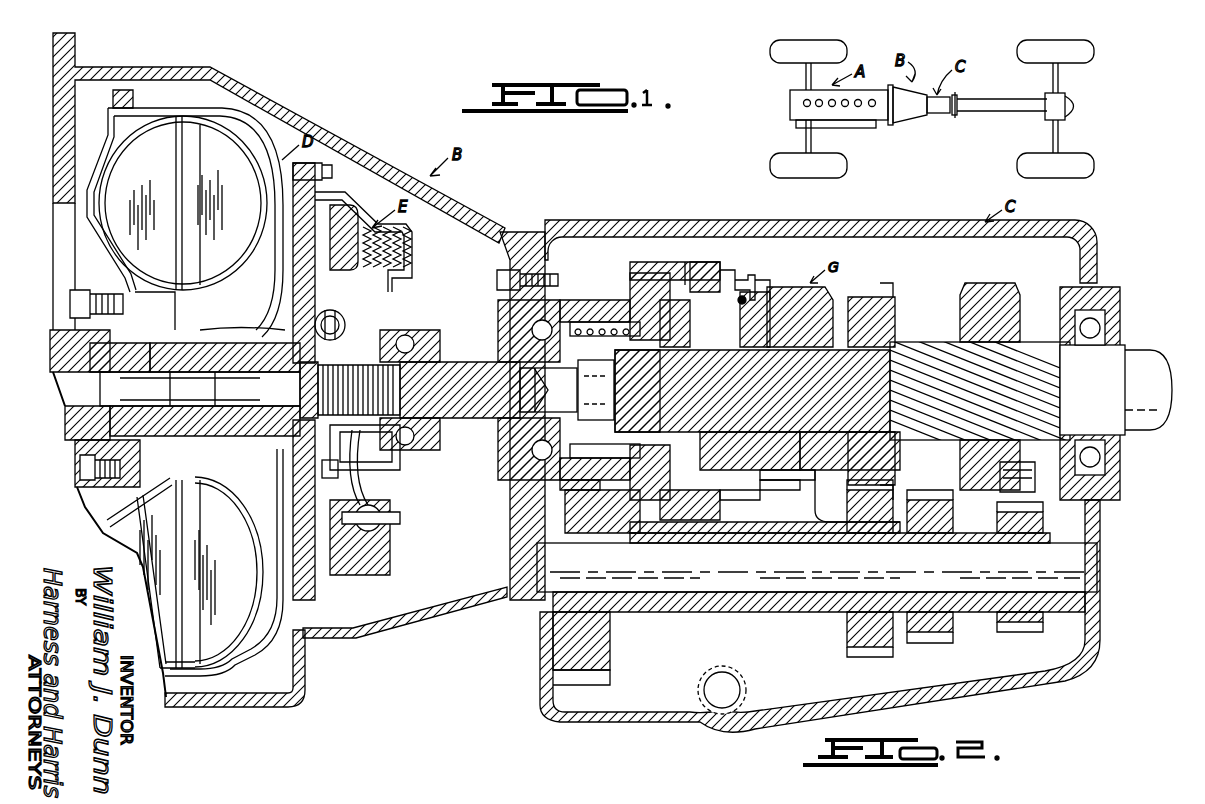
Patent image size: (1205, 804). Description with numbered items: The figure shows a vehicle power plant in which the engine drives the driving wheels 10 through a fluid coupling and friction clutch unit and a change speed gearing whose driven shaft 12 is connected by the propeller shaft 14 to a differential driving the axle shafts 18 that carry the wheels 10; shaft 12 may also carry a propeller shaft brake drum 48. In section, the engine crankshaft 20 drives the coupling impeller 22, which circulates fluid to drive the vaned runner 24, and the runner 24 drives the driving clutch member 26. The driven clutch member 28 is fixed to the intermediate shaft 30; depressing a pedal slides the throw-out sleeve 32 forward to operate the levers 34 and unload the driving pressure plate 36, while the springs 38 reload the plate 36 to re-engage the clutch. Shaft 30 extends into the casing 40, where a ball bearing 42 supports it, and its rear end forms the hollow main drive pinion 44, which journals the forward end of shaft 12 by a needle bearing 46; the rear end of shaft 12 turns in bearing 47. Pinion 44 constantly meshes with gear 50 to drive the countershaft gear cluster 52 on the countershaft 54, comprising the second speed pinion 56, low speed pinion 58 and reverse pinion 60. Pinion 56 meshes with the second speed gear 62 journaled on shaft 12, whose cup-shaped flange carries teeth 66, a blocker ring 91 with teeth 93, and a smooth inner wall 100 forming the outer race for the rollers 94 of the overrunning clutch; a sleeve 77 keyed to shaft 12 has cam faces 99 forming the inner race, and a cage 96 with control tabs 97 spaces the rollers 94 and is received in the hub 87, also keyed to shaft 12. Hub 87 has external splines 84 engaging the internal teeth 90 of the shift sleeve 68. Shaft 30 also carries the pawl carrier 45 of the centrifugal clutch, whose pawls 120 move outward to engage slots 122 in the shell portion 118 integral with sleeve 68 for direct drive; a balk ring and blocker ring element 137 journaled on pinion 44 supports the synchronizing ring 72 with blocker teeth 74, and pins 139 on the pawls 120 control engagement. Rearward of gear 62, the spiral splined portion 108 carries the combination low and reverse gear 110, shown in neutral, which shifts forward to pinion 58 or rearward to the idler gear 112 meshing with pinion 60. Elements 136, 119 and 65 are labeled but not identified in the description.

In FIG. 1, the driving wheels 10 is at (1080, 45).
In FIG. 1, the axle shafts 18 is at (1060, 76).
In FIG. 1, the propeller shaft 14 is at (1000, 105).
In FIG. 1, the driven shaft 12 is at (955, 115).
In FIG. 2, the driven shaft 12 is at (870, 396).
In FIG. 1, the propeller shaft brake drum 48 is at (962, 92).
In FIG. 2, the crankshaft 20 is at (60, 405).
In FIG. 2, the coupling impeller 22 is at (150, 176).
In FIG. 2, the vaned runner 24 is at (222, 180).
In FIG. 2, the converter hub 136 is at (215, 335).
In FIG. 2, the intermediate shaft 30 is at (455, 393).
In FIG. 2, the springs 38 is at (395, 285).
In FIG. 2, the driven clutch member 28 is at (335, 287).
In FIG. 2, the throw-out sleeve 32 is at (440, 332).
In FIG. 2, the levers 34 is at (378, 463).
In FIG. 2, the driving pressure plate 36 is at (385, 574).
In FIG. 2, the driving clutch member 26 is at (302, 600).
In FIG. 2, the casing 40 is at (530, 700).
In FIG. 2, the ball bearing 42 is at (520, 470).
In FIG. 2, the needle bearing 46 is at (556, 390).
In FIG. 2, the pins 139 is at (630, 328).
In FIG. 2, the main drive pinion 44 is at (610, 288).
In FIG. 2, the pawl carrier 45 is at (625, 278).
In FIG. 2, the blocker ring 119 is at (640, 262).
In FIG. 2, the combination pawl balk ring and shift sleeve blocker ring element 137 is at (640, 355).
In FIG. 2, the hub 87 is at (714, 345).
In FIG. 2, the cage 96 is at (748, 335).
In FIG. 2, the cam faces 99 is at (790, 345).
In FIG. 2, the sleeve member 77 is at (803, 348).
In FIG. 2, the synchronizing and blocker ring element 72 is at (650, 386).
In FIG. 2, the pawl 120 is at (686, 262).
In FIG. 2, the pawl receiving slots 122 is at (688, 262).
In FIG. 2, the control tabs 97 is at (720, 262).
In FIG. 2, the shift sleeve 68 is at (735, 275).
In FIG. 2, the teeth 93 is at (764, 285).
In FIG. 2, the teeth 66 is at (770, 285).
In FIG. 2, the synchronizer sleeve 65 is at (836, 295).
In FIG. 2, the second speed gear 62 is at (885, 297).
In FIG. 2, the external splines 84 is at (690, 505).
In FIG. 2, the smooth inner wall portion 100 is at (805, 492).
In FIG. 2, the rollers 94 is at (780, 470).
In FIG. 2, the blocker ring 91 is at (768, 495).
In FIG. 2, the internal teeth 90 is at (725, 500).
In FIG. 2, the blocker teeth 74 is at (655, 532).
In FIG. 2, the pawl receiving shell portion 118 is at (648, 530).
In FIG. 2, the spiral splined portion 108 is at (1030, 345).
In FIG. 2, the combination low and reverse gear 110 is at (985, 283).
In FIG. 2, the idler gear 112 is at (1022, 470).
In FIG. 2, the bearing 47 is at (1108, 450).
In FIG. 2, the countershaft 54 is at (902, 562).
In FIG. 2, the countershaft gear cluster 52 is at (720, 622).
In FIG. 2, the gear 50 is at (612, 680).
In FIG. 2, the second speed pinion 56 is at (845, 654).
In FIG. 2, the low speed pinion 58 is at (945, 640).
In FIG. 2, the reverse pinion 60 is at (1018, 632).